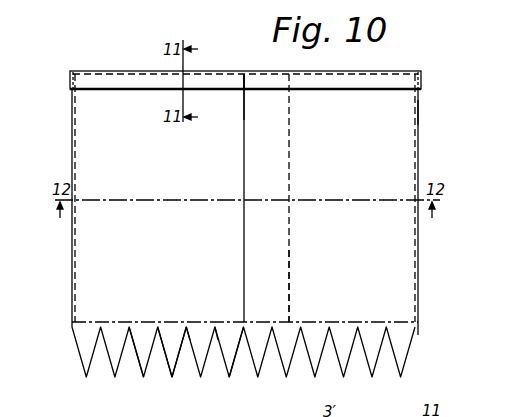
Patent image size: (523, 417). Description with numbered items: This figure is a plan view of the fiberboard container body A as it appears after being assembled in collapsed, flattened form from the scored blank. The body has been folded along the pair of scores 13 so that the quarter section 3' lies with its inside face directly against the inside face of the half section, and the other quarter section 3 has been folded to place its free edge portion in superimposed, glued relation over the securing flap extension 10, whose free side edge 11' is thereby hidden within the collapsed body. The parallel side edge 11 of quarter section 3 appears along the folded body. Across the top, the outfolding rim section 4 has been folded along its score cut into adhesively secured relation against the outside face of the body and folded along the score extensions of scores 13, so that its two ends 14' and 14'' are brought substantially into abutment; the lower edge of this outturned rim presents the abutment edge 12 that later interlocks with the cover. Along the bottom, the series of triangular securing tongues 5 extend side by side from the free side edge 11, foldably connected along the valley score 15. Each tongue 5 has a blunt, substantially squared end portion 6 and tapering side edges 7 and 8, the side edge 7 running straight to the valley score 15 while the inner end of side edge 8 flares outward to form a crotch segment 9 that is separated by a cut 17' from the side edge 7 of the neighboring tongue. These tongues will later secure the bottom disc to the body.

The rim section 4 is at (132, 80).
The scores 13 is at (419, 131).
The securing tongues 5 is at (405, 349).
The free side edge 11 is at (221, 198).
The end of rim section 14'' is at (263, 97).
The end of rim section 14' is at (235, 65).
The securing flap extension 10 is at (278, 253).
The free side edge 11' is at (317, 286).
The abutment edge 12 is at (340, 88).
The container body A is at (421, 112).
The quarter section 3' is at (157, 179).
The quarter section 3 is at (347, 178).
The valley score 15 is at (144, 322).
The crotch segment 9 is at (186, 328).
The cut 17' is at (222, 314).
The side edge 7 is at (166, 354).
The side edge 8 is at (180, 356).
The end portion 6 is at (228, 374).